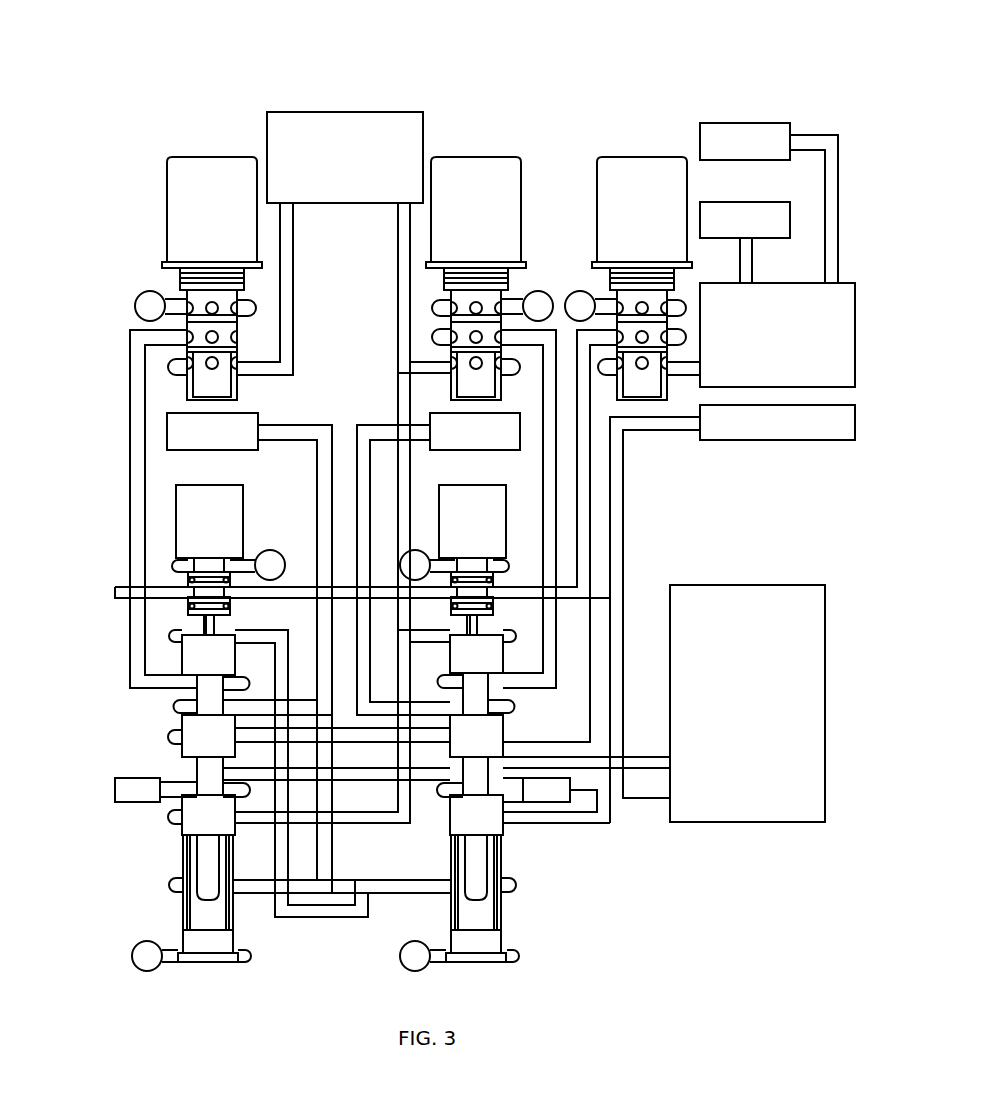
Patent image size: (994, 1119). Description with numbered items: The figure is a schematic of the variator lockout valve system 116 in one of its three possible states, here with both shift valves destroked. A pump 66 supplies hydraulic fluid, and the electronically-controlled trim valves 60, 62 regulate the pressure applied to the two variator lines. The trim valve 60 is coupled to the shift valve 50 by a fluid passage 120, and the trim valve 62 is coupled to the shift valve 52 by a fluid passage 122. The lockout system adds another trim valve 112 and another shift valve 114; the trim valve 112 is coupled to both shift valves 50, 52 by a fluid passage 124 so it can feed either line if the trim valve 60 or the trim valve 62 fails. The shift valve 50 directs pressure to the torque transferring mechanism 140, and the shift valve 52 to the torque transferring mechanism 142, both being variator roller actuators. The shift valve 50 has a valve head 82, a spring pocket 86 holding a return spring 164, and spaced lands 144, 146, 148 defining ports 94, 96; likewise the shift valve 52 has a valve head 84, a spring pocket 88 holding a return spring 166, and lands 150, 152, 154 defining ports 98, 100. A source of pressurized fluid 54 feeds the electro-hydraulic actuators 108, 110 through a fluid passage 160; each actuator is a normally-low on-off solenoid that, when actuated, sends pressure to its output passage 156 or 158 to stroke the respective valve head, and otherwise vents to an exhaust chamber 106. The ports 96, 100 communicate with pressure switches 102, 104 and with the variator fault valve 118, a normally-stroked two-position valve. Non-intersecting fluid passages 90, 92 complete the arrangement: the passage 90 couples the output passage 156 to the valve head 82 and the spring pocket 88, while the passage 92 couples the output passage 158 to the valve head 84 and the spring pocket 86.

The shift valve 50 is at (100, 667).
The shift valve 52 is at (572, 900).
The source of pressurized hydraulic fluid 54 is at (789, 435).
The trim valve 60 is at (153, 148).
The trim valve 62 is at (480, 145).
The pump 66 is at (358, 170).
The valve head 82 is at (189, 631).
The valve head 84 is at (496, 631).
The spring pocket 86 is at (198, 908).
The spring pocket 88 is at (482, 908).
The fluid passage 90 is at (300, 918).
The fluid passage 92 is at (334, 862).
The port 94 is at (195, 696).
The port 96 is at (195, 777).
The port 98 is at (470, 690).
The port 100 is at (470, 772).
The pressure switch 102 is at (116, 784).
The pressure switch 104 is at (555, 803).
The exhaust chamber 106 is at (142, 292).
The electro-hydraulic actuator 108 is at (226, 532).
The electro-hydraulic actuator 110 is at (492, 532).
The trim valve 112 is at (633, 145).
The shift valve 114 is at (794, 346).
The variator lockout valve system 116 is at (765, 72).
The variator fault valve 118 is at (765, 712).
The fluid passage 120 is at (130, 424).
The fluid passage 122 is at (538, 464).
The fluid passage 124 is at (594, 476).
The torque transferring mechanism 140 is at (278, 410).
The torque transferring mechanism 142 is at (410, 410).
The land 144 is at (190, 667).
The land 146 is at (177, 732).
The land 148 is at (182, 828).
The land 150 is at (503, 659).
The land 152 is at (503, 737).
The land 154 is at (503, 834).
The output passage 156 is at (214, 626).
The output passage 158 is at (468, 626).
The fluid passage 160 is at (624, 540).
The return spring 164 is at (182, 858).
The return spring 166 is at (498, 862).